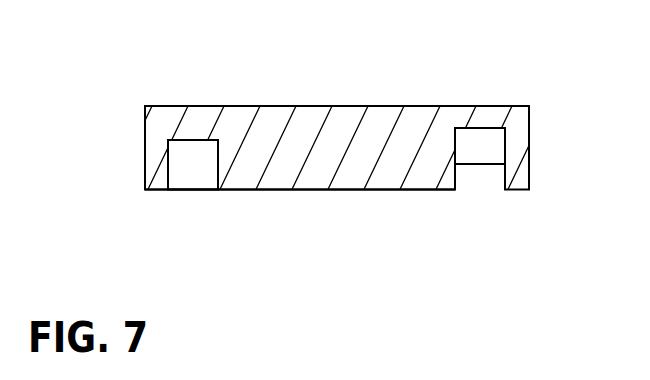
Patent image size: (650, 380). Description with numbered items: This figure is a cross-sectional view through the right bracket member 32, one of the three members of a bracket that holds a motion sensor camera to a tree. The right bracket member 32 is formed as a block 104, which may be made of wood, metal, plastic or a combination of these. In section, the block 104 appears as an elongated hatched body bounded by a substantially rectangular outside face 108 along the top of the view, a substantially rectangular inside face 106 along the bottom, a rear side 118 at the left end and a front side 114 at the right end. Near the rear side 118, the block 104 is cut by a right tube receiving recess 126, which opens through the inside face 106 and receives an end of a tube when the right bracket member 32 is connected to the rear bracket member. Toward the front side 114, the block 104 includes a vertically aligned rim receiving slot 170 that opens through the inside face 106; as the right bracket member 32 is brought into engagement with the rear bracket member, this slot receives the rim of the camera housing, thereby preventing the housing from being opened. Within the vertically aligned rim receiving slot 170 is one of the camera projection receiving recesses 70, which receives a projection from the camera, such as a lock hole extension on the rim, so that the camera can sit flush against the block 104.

The block 104 is at (422, 104).
The outside face 108 is at (308, 106).
The inside face 106 is at (310, 190).
The rear side 118 is at (145, 147).
The front side 114 is at (530, 140).
The right bracket member 32 is at (532, 162).
The right tube receiving recess 126 is at (190, 168).
The camera projection receiving recess 70 is at (483, 139).
The vertically aligned rim receiving slot 170 is at (473, 170).